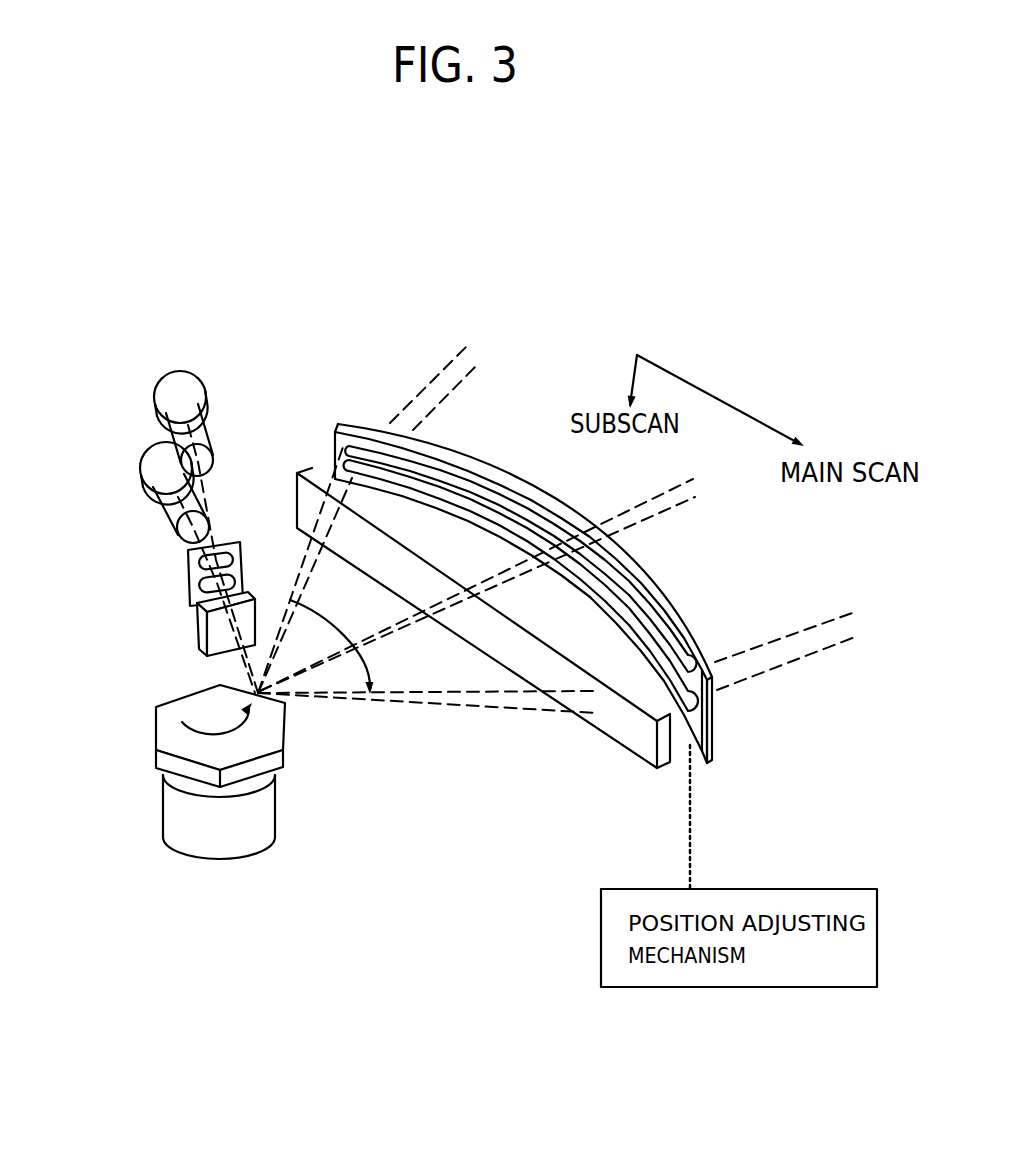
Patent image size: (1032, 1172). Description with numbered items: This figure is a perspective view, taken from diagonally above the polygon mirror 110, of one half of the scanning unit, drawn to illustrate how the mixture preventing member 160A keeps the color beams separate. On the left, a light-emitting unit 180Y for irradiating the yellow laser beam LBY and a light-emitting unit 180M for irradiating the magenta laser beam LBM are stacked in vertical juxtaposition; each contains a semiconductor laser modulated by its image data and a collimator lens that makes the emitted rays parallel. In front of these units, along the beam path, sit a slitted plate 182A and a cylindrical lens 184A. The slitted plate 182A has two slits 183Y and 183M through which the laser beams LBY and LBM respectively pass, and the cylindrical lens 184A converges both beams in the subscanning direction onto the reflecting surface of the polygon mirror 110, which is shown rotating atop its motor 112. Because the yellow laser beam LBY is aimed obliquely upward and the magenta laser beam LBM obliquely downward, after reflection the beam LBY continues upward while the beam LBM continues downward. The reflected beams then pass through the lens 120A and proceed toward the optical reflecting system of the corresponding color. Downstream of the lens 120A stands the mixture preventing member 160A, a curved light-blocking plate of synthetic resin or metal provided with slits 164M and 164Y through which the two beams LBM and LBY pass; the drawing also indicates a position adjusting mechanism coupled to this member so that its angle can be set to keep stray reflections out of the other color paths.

The polygon mirror 110 is at (287, 736).
The polygon motor 112 is at (277, 808).
The lens 120A is at (626, 712).
The mixture preventing member 160A is at (586, 566).
The slit 164Y is at (637, 578).
The slit 164M is at (693, 712).
The light-emitting unit 180M is at (156, 365).
The light-emitting unit 180Y is at (134, 495).
The slitted plate 182A is at (255, 537).
The slit 183M is at (188, 566).
The slit 183Y is at (190, 604).
The cylindrical lens 184A is at (203, 650).
The magenta laser beam LBM is at (225, 537).
The yellow laser beam LBY is at (257, 693).